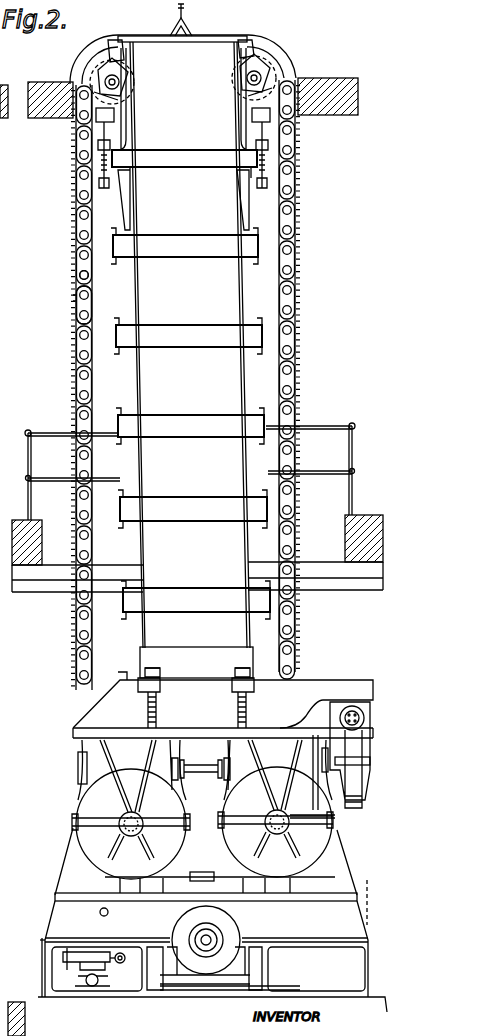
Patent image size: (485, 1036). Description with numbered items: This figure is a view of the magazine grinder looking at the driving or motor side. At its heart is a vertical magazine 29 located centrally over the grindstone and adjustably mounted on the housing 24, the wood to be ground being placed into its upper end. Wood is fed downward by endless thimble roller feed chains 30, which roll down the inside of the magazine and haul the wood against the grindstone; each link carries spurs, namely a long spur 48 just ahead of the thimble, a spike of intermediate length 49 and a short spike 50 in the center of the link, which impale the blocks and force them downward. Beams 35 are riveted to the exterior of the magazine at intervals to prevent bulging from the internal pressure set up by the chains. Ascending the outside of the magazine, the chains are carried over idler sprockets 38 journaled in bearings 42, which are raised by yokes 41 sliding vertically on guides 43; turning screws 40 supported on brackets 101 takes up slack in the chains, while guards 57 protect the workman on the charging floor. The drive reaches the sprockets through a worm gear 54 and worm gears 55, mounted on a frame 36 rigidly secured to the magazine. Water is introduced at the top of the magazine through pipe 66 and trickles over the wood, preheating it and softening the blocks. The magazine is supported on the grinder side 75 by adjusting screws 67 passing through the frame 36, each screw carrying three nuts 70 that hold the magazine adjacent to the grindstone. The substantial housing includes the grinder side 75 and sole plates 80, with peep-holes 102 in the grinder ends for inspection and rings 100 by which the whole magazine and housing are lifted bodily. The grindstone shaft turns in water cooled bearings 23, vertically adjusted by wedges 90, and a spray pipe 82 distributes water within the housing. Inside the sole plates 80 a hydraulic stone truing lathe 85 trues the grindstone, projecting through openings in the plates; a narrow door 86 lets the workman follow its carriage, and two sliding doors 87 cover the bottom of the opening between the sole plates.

The water cooled bearings 23 is at (184, 964).
The housing 24 is at (68, 846).
The magazine 29 is at (253, 649).
The feed chains 30 is at (75, 226).
The beams 35 is at (270, 592).
The frame 36 is at (82, 716).
The idler sprockets 38 is at (112, 60).
The screws 40 is at (100, 136).
The yokes 41 is at (96, 116).
The bearings 42 is at (104, 72).
The guides 43 is at (130, 142).
The long spur 48 is at (78, 283).
The spike of intermediate length 49 is at (78, 292).
The short spike 50 is at (78, 300).
The worm gear 54 is at (360, 804).
The worm gears 55 is at (97, 788).
The guards 57 is at (72, 70).
The pipe 66 is at (183, 9).
The adjusting screws 67 is at (240, 668).
The nuts 70 is at (251, 672).
The grinder side 75 is at (330, 878).
The sole plates 80 is at (356, 967).
The spray pipe 82 is at (100, 914).
The hydraulic stone truing lathe 85 is at (63, 961).
The narrow door 86 is at (42, 948).
The sliding doors 87 is at (46, 980).
The wedges 90 is at (258, 987).
The rings 100 is at (194, 34).
The brackets 101 is at (120, 202).
The peep-holes 102 is at (22, 910).